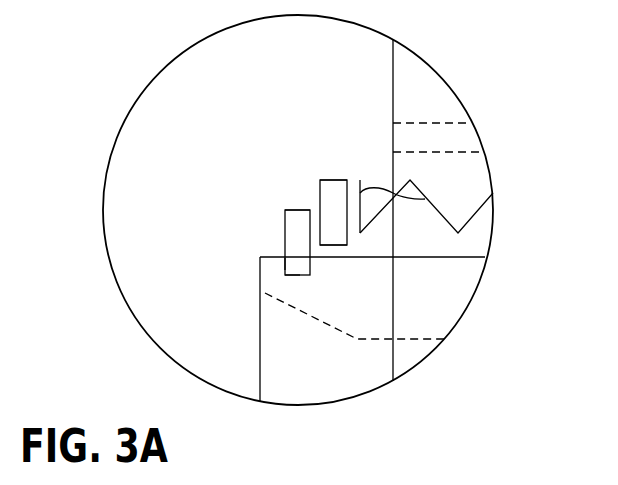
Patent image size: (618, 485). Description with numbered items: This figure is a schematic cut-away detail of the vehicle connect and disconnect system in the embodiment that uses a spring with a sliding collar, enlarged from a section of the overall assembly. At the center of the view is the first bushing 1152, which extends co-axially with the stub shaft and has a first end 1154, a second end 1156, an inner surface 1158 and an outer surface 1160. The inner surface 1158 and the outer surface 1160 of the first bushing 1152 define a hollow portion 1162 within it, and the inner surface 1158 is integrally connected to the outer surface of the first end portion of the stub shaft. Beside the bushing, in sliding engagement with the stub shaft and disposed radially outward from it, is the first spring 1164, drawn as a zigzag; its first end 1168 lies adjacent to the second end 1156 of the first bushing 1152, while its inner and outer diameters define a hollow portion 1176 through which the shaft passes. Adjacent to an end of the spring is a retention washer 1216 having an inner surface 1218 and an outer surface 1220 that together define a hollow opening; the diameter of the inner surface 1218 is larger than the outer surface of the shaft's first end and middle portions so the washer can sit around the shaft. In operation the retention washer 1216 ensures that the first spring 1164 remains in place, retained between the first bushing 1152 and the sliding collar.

The first bushing 1152 is at (285, 223).
The first end 1154 is at (284, 265).
The second end 1156 is at (312, 276).
The inner surface 1158 is at (295, 276).
The outer surface 1160 is at (303, 209).
The hollow portion 1162 is at (305, 288).
The first spring 1164 is at (438, 208).
The first end 1168 is at (442, 184).
The hollow portion 1176 is at (463, 243).
The retention washer 1216 is at (327, 180).
The inner surface 1218 is at (337, 247).
The outer surface 1220 is at (340, 180).